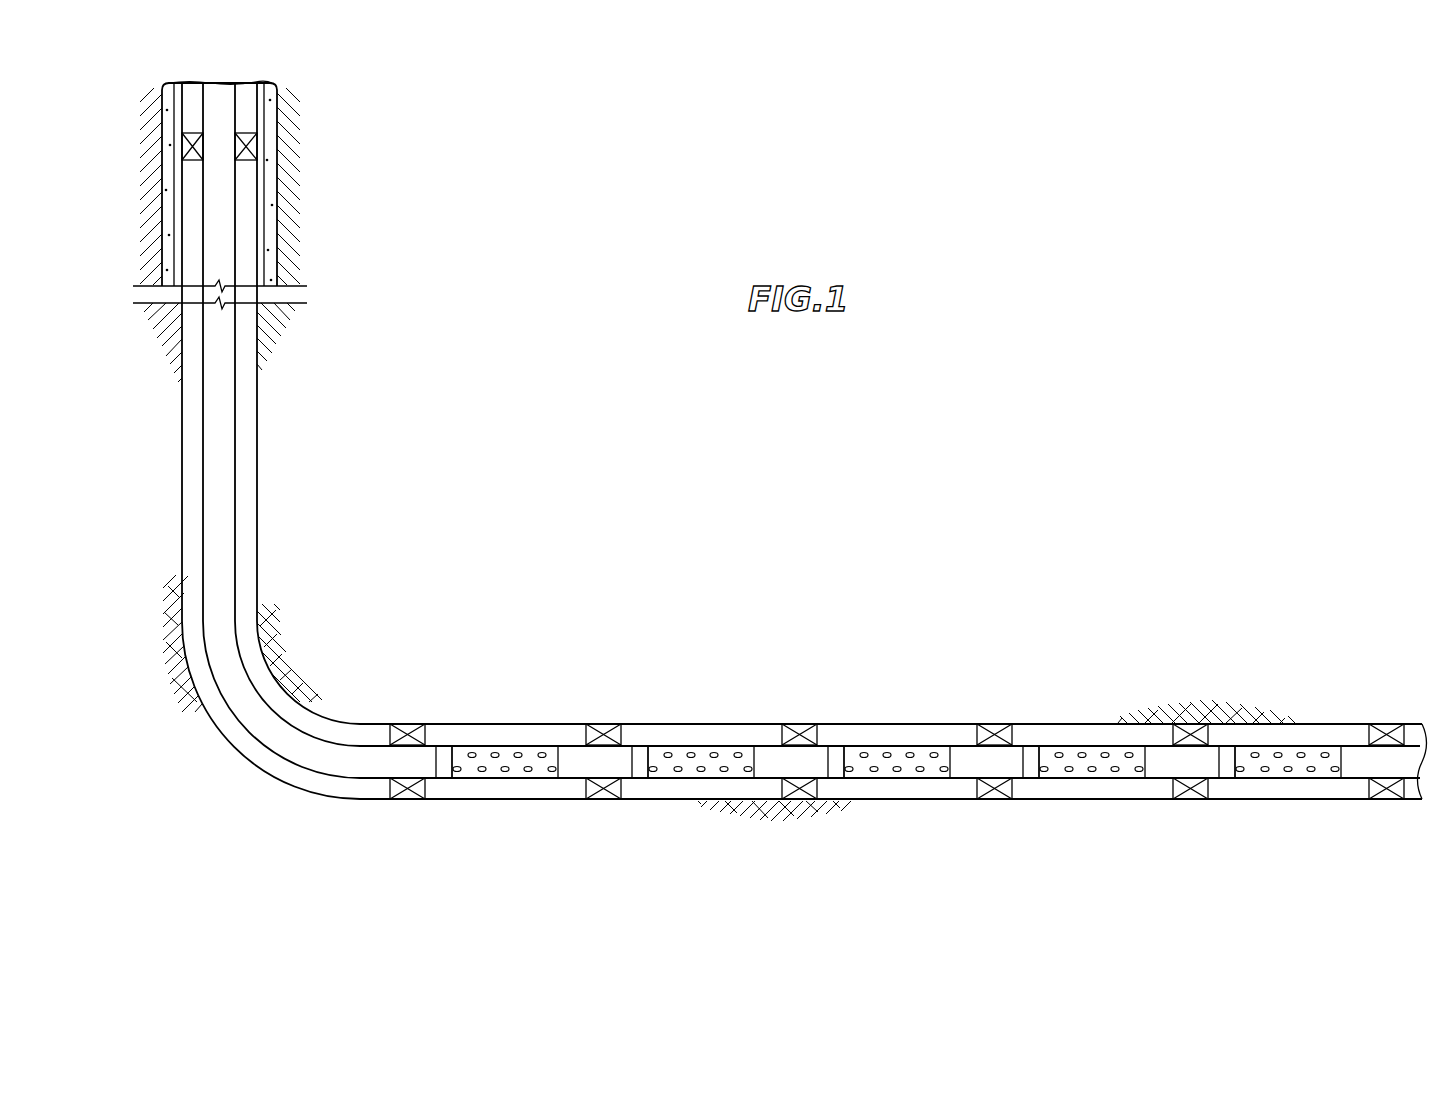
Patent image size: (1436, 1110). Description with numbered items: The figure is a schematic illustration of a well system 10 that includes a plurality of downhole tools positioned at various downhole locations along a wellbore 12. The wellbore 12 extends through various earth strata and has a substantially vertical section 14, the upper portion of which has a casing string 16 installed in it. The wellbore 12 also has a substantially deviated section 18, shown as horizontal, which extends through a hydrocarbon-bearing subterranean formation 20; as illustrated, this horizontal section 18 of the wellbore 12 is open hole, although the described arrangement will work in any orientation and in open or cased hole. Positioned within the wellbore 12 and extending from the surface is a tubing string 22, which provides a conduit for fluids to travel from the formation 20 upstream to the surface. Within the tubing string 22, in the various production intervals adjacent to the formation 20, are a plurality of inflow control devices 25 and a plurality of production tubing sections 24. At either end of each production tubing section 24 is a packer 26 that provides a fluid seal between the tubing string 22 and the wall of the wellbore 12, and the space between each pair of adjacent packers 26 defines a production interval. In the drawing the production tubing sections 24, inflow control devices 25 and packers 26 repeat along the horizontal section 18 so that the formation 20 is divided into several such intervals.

The well system 10 is at (485, 342).
The wellbore 12 is at (257, 449).
The substantially vertical section 14 is at (257, 413).
The casing string 16 is at (265, 227).
The substantially deviated section 18 is at (720, 733).
The hydrocarbon-bearing subterranean formation 20 is at (770, 633).
The tubing string 22 is at (236, 476).
The production tubing section 24 is at (506, 745).
The inflow control device 25 is at (446, 744).
The packer 26 is at (410, 800).